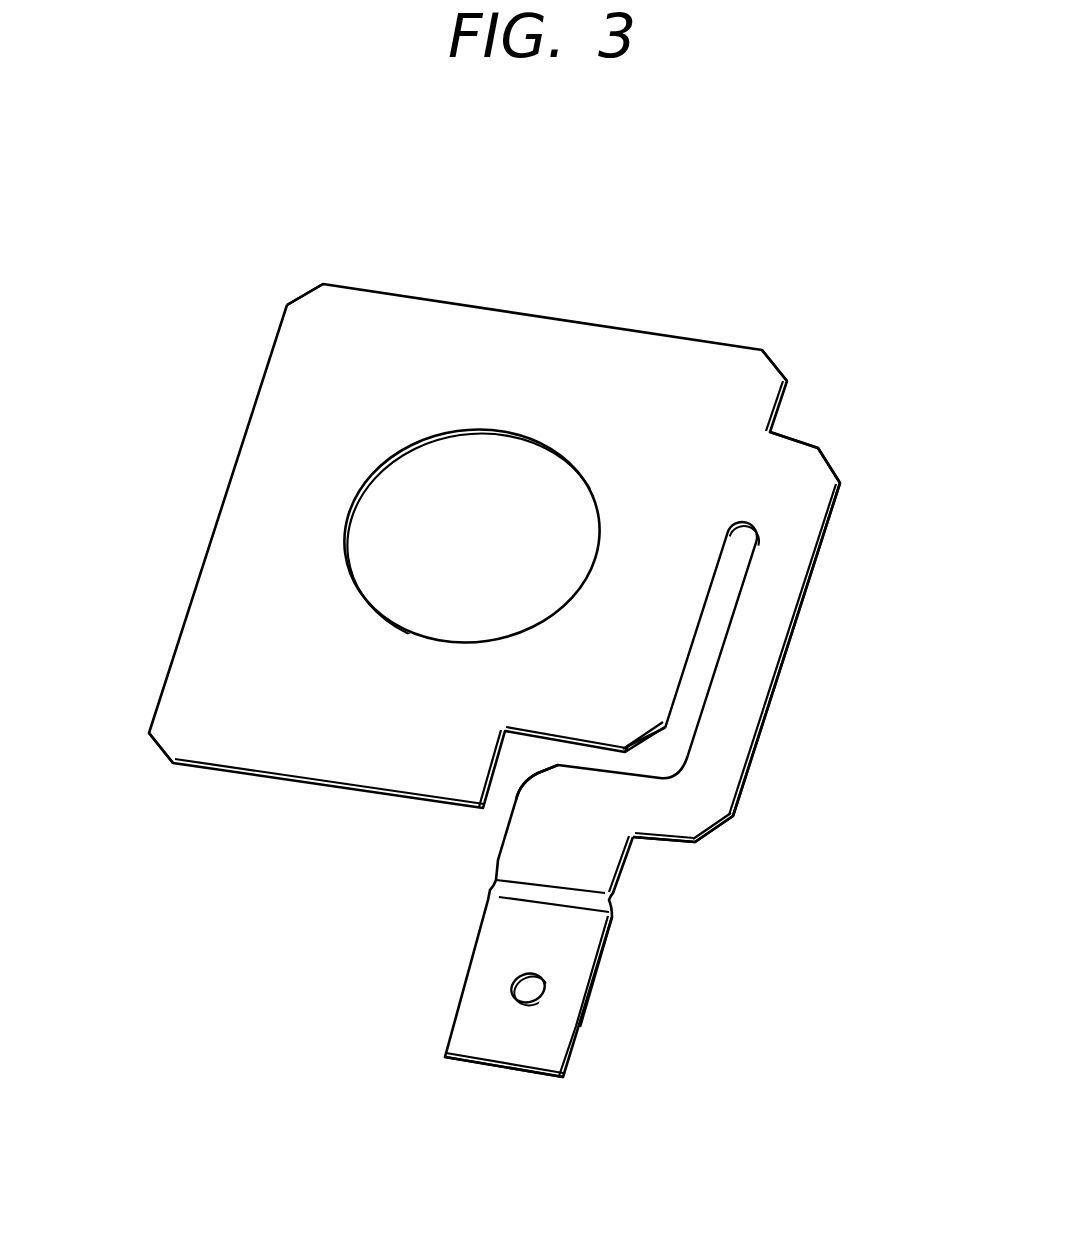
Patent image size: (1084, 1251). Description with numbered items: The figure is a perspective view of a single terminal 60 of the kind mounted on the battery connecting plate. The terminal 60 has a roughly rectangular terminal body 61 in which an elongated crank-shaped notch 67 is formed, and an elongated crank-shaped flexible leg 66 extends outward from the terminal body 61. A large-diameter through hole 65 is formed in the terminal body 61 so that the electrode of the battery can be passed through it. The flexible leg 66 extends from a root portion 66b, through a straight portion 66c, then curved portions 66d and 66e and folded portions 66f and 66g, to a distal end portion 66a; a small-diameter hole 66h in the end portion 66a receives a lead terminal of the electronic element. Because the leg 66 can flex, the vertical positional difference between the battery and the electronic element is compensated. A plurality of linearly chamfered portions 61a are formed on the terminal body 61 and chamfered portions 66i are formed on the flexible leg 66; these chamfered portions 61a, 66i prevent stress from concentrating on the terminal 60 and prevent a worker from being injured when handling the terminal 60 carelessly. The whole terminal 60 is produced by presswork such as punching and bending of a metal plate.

The terminal 60 is at (760, 316).
The terminal body 61 is at (283, 405).
The chamfered portions 61a is at (308, 292).
The through hole 65 is at (517, 478).
The flexible leg 66 is at (468, 880).
The distal end portion 66a is at (480, 1063).
The root portion 66b is at (773, 500).
The straight portion 66c is at (810, 592).
The curved portion 66d is at (698, 812).
The curved portion 66e is at (585, 843).
The folded portion 66f is at (617, 895).
The folded portion 66g is at (620, 905).
The hole 66h is at (527, 987).
The chamfered portions 66i is at (832, 462).
The notch 67 is at (716, 633).